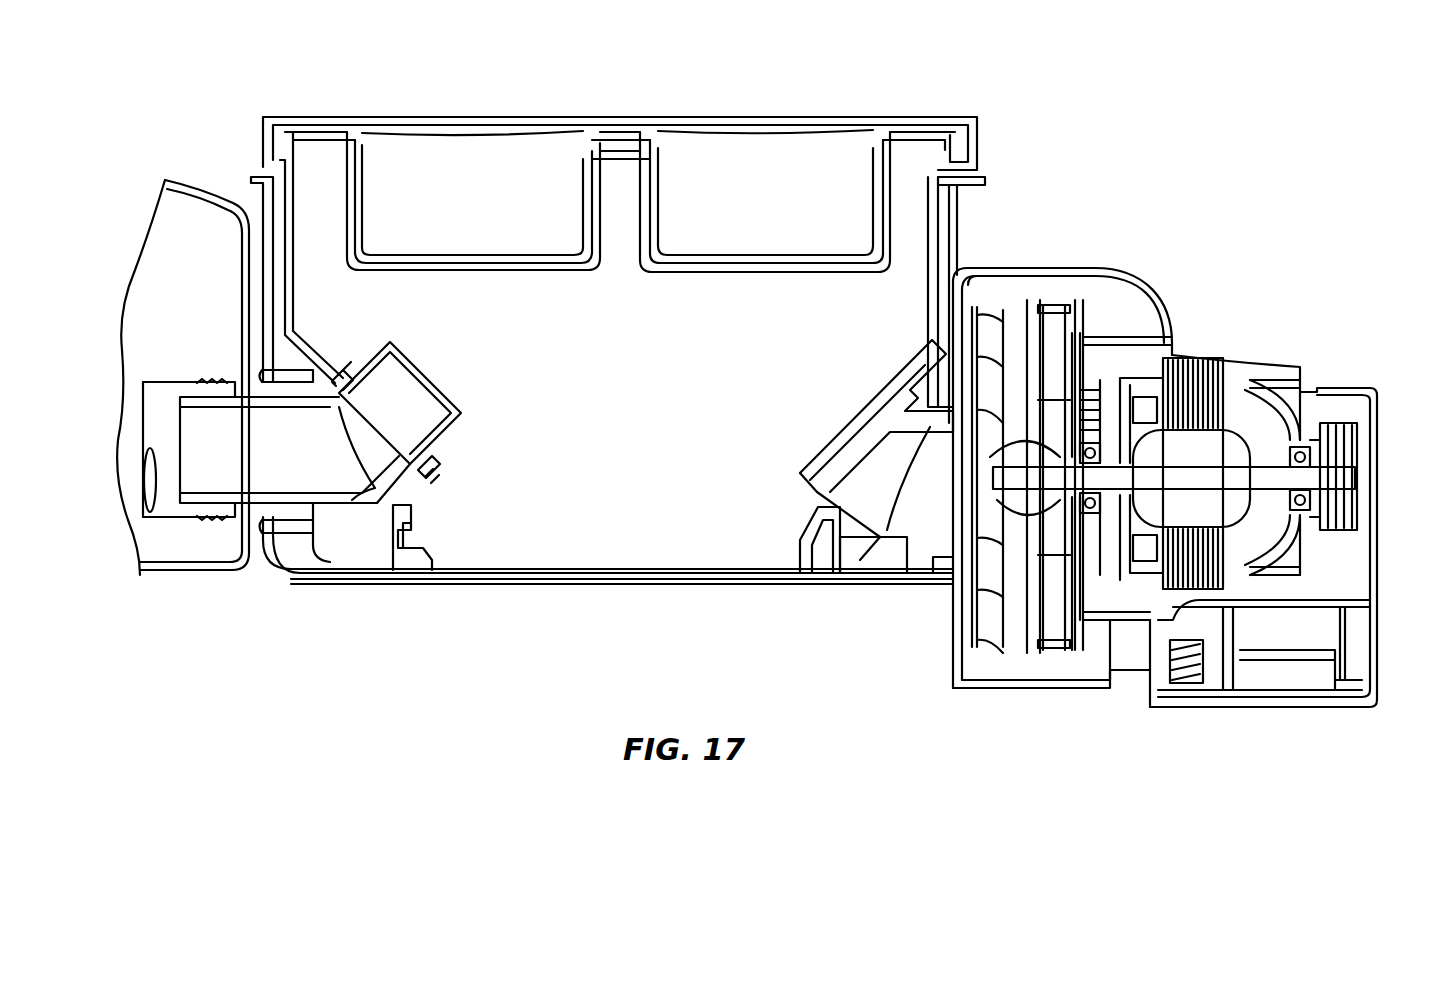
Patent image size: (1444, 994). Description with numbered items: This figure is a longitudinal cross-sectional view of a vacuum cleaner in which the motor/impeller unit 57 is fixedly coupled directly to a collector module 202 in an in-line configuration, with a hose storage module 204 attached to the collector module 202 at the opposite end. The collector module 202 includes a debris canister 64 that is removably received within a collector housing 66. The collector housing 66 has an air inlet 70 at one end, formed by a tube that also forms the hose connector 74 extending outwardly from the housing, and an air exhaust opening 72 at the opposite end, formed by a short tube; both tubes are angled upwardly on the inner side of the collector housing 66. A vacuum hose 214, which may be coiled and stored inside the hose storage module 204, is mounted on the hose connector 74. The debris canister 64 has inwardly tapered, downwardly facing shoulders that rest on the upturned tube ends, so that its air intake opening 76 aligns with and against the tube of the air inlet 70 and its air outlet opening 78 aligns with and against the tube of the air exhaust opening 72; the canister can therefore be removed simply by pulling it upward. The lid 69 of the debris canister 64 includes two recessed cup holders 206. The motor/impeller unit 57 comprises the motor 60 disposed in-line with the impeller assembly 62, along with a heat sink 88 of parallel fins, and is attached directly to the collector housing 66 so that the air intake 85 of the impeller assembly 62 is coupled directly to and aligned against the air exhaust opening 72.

The hose storage module 204 is at (197, 180).
The recessed cup holders 206 is at (455, 137).
The lid 69 is at (905, 118).
The debris canister 64 is at (937, 245).
The air intake 85 is at (977, 442).
The heat sink 88 is at (1205, 357).
The motor 60 is at (1343, 465).
The vacuum hose 214 is at (180, 380).
The air intake opening 76 is at (388, 432).
The air outlet opening 78 is at (870, 410).
The hose connector 74 is at (256, 510).
The air inlet 70 is at (373, 458).
The collector module 202 is at (533, 600).
The collector housing 66 is at (737, 587).
The air exhaust opening 72 is at (870, 522).
The impeller assembly 62 is at (1030, 690).
The motor/impeller unit 57 is at (1262, 724).